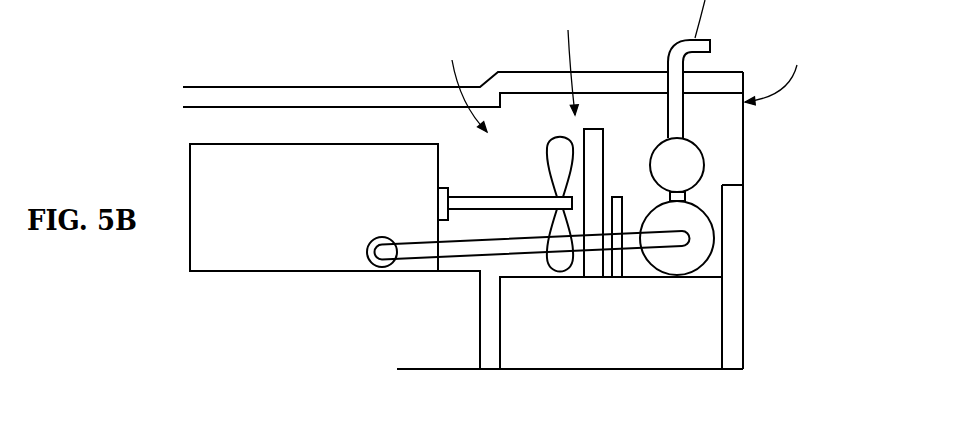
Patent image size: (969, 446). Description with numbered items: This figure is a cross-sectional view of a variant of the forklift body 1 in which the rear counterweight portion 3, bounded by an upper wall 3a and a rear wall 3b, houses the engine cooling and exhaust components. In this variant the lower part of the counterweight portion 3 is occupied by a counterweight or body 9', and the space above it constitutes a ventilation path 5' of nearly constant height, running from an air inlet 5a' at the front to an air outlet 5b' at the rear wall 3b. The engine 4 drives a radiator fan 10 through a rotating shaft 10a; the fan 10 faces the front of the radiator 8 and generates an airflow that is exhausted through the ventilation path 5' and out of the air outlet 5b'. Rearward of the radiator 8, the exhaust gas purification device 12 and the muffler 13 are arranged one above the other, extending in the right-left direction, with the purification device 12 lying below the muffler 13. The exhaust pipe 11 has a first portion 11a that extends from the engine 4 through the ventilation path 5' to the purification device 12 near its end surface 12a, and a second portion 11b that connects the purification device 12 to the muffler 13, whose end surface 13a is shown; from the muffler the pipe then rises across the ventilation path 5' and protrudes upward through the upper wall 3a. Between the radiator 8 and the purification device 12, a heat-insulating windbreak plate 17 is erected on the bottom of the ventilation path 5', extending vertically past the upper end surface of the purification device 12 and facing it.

The body 1 is at (443, 360).
The counterweight portion 3 is at (646, 78).
The upper wall 3a is at (728, 78).
The rear wall 3b is at (738, 303).
The engine 4 is at (297, 162).
The ventilation path 5' is at (568, 57).
The air inlet 5a' is at (461, 83).
The air outlet 5b' is at (782, 74).
The radiator 8 is at (593, 135).
The counterweight or body 9' is at (611, 350).
The radiator fan 10 is at (560, 137).
The rotating shaft 10a is at (522, 209).
The exhaust pipe 11 is at (529, 244).
The first portion 11a is at (460, 252).
The second portion 11b is at (687, 196).
The exhaust gas purification device 12 is at (715, 242).
The left end surface (lower end surface) 12a is at (697, 232).
The muffler 13 is at (705, 165).
The left end surface (lower end surface) 13a is at (687, 157).
The windbreak plate 17 is at (621, 210).